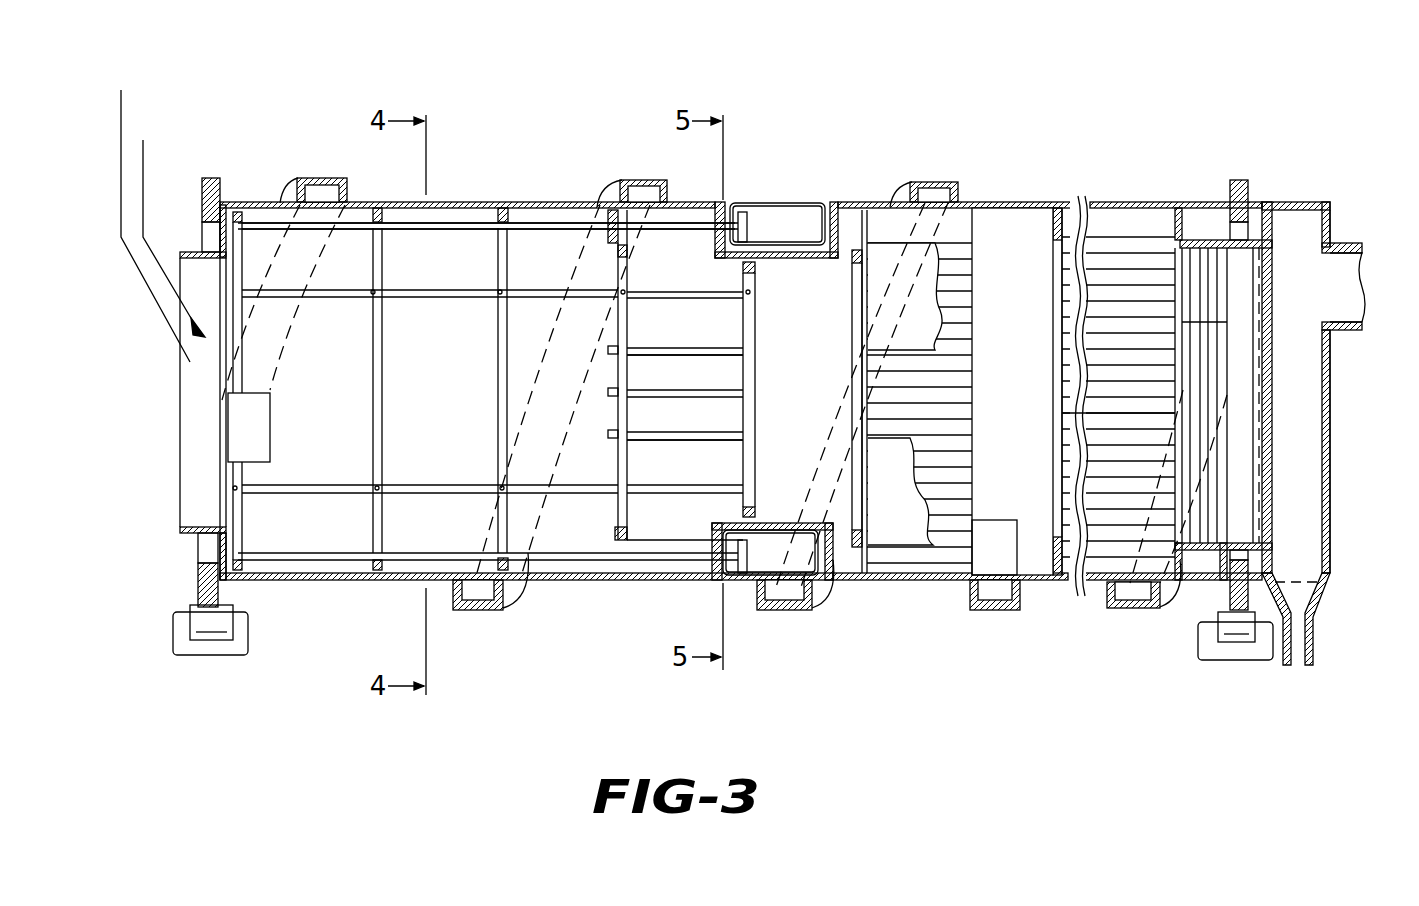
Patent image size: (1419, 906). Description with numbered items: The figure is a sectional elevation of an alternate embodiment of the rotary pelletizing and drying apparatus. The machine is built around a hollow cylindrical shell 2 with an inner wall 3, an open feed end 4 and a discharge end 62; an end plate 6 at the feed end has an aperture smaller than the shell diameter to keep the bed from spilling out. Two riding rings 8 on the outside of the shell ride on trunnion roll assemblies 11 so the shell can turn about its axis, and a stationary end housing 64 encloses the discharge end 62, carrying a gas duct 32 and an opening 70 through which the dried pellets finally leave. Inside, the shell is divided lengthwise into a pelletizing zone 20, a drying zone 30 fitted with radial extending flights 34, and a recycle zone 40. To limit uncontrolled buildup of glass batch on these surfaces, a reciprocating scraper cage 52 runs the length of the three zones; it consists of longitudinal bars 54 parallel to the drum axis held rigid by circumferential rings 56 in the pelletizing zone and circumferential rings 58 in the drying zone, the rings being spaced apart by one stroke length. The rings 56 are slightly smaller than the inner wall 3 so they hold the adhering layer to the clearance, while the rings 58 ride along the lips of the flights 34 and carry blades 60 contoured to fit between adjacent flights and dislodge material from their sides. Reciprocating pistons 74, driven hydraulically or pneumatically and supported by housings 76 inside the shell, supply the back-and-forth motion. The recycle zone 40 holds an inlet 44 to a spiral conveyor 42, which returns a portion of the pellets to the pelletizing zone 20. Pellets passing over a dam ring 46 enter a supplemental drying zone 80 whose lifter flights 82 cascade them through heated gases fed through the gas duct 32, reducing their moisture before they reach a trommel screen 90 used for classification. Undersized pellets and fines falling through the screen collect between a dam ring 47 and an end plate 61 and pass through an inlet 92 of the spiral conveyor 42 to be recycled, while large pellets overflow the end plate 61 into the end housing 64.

The hollow cylindrical shell 2 is at (446, 200).
The inner wall 3 is at (418, 202).
The feed end 4 is at (188, 435).
The end plate 6 is at (222, 547).
The riding rings 8 is at (212, 178).
The trunnion roll assemblies 11 is at (228, 648).
The pelletizing zone 20 is at (426, 408).
The drying zone 30 is at (764, 335).
The gas duct 32 is at (1350, 245).
The radial extending flight 34 is at (787, 437).
The recycle zone 40 is at (994, 398).
The spiral conveyor 42 is at (320, 180).
The inlet 44 is at (985, 612).
The dam ring 46 is at (1055, 580).
The dam ring 47 is at (1180, 580).
The reciprocating scraper cage 52 is at (542, 220).
The longitudinal bars 54 is at (672, 292).
The circumferential rings 56 is at (378, 349).
The circumferential rings 58 is at (852, 305).
The blades 60 is at (603, 205).
The end plate 61 is at (1215, 583).
The discharge end 62 is at (1275, 455).
The end housing 64 is at (1330, 500).
The opening 70 is at (1300, 645).
The reciprocating pistons 74 is at (745, 212).
The housings 76 is at (790, 215).
The supplemental drying zone 80 is at (1106, 387).
The lifter flights 82 is at (1132, 262).
The trommel screen 90 is at (1200, 262).
The inlet 92 is at (1135, 607).